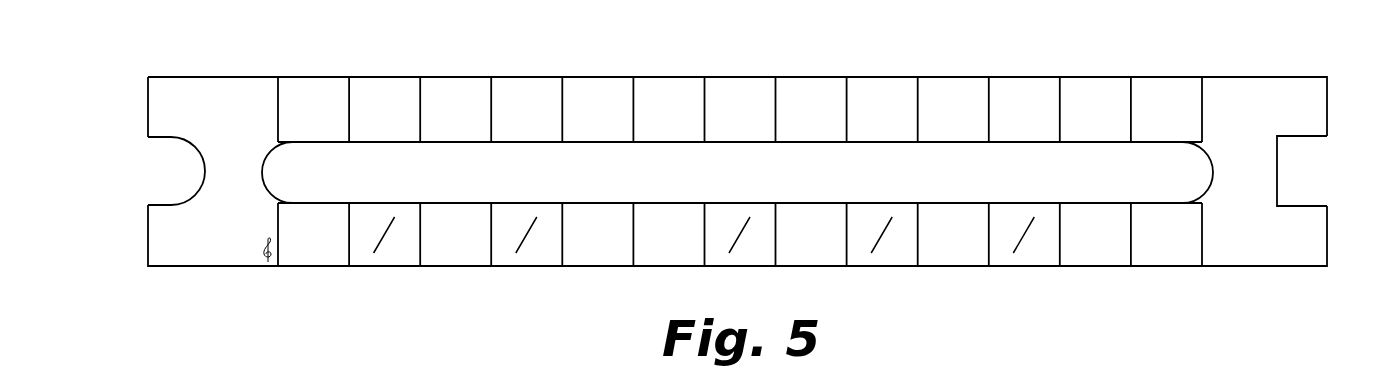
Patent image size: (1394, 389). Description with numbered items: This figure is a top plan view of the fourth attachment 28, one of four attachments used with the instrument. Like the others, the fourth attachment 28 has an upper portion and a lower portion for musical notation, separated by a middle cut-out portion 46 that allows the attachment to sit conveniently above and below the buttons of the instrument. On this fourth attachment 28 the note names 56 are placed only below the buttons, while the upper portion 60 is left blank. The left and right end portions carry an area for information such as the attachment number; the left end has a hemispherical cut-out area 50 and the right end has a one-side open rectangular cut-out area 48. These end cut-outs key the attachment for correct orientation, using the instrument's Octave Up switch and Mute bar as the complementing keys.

The fourth attachment 28 is at (252, 107).
The cut-out portion 46 is at (737, 172).
The one-side open rectangular cut-out area 48 is at (1297, 153).
The hemispherical cut-out area 50 is at (178, 165).
The note names 56 is at (575, 250).
The upper portion 60 is at (867, 97).